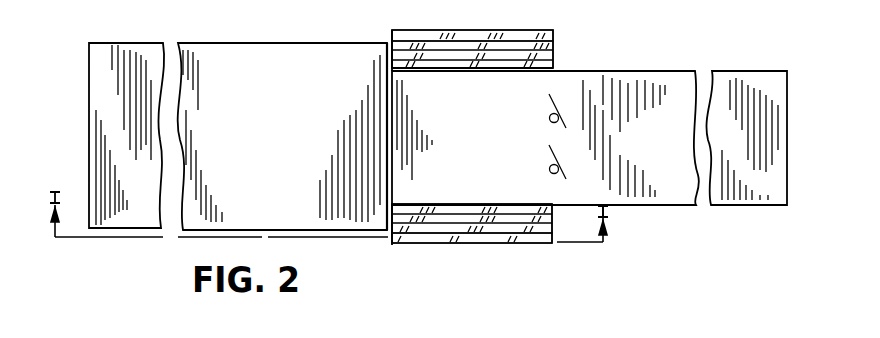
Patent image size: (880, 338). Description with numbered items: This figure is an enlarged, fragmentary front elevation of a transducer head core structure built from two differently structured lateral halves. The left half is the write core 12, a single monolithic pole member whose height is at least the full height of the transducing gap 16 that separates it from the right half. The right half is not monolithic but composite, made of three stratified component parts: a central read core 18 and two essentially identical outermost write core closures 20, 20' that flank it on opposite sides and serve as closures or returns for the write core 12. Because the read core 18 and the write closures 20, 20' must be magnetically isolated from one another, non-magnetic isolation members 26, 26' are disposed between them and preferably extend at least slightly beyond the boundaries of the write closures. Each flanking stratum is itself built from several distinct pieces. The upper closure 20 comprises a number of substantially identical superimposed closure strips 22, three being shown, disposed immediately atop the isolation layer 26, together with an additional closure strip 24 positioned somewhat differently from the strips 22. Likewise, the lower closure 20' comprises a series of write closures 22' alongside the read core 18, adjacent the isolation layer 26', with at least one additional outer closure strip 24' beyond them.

The write core 12 is at (276, 143).
The transducing gap 16 is at (388, 48).
The read core 18 is at (658, 151).
The write core closure 20 is at (504, 35).
The write core closure 20' is at (500, 260).
The closure strips 22 is at (495, 57).
The write closures 22' is at (496, 223).
The additional closure strip 24 is at (472, 21).
The additional outer closure strip 24' is at (494, 259).
The non-magnetic isolation member 26 is at (472, 89).
The non-magnetic isolation member 26' is at (472, 187).